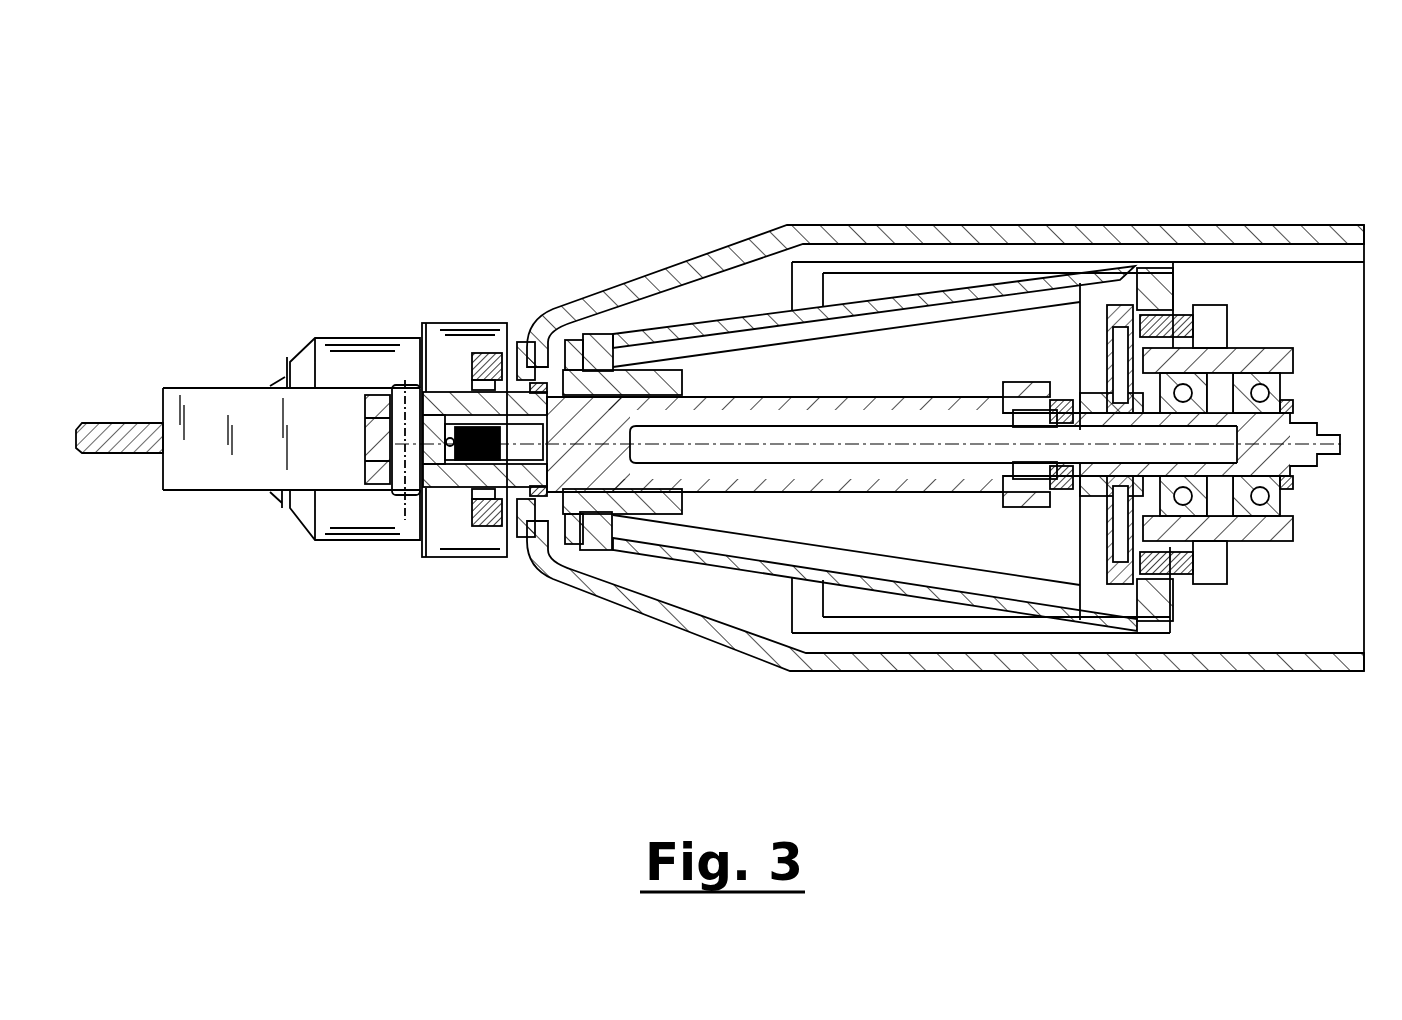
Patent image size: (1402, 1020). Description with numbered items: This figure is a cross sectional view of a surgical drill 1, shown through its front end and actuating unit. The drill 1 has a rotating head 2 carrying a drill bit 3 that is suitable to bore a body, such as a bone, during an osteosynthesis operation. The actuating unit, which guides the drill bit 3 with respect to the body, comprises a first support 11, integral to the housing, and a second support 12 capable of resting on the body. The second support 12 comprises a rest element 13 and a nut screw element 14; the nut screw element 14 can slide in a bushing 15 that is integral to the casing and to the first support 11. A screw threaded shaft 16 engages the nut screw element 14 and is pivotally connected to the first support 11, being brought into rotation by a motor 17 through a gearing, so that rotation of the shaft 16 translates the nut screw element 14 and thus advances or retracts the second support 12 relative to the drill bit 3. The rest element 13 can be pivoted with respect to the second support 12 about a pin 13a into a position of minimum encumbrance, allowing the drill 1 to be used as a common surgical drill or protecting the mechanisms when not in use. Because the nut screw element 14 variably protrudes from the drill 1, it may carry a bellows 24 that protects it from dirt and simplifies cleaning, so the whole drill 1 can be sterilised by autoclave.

The surgical drill 1 is at (712, 206).
The rotating head 2 is at (337, 357).
The drill bit 3 is at (115, 427).
The first support 11 is at (1005, 611).
The second support 12 is at (438, 559).
The rest element 13 is at (285, 473).
The pin 13a is at (403, 400).
The nut screw element 14 is at (687, 493).
The bushing 15 is at (567, 497).
The screw threaded shaft 16 is at (898, 455).
The motor 17 is at (1118, 294).
The bellows 24 is at (482, 352).